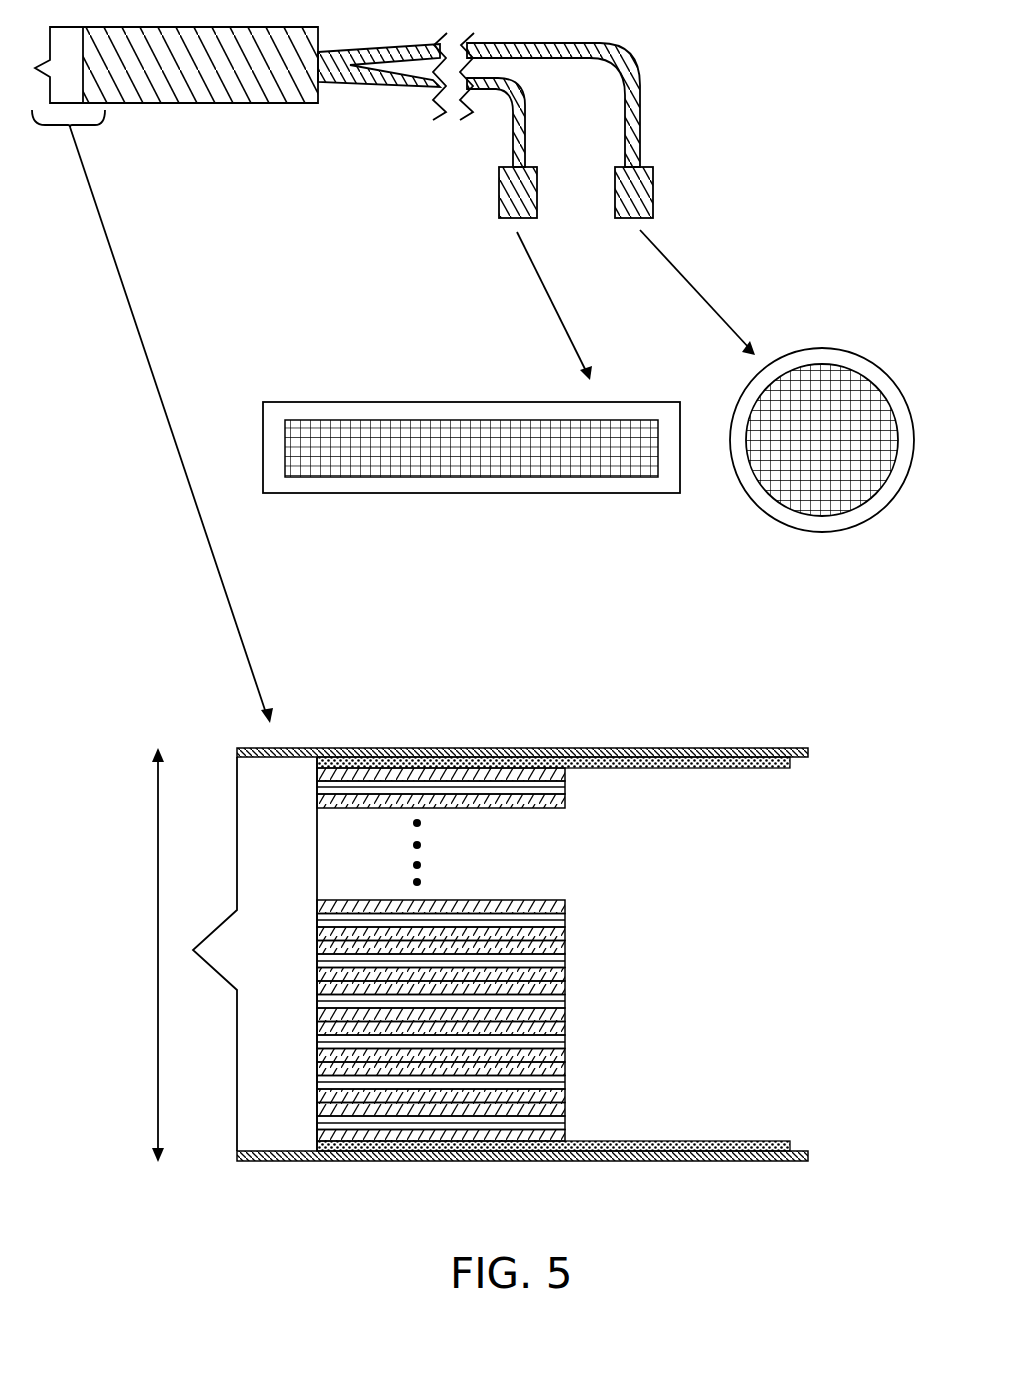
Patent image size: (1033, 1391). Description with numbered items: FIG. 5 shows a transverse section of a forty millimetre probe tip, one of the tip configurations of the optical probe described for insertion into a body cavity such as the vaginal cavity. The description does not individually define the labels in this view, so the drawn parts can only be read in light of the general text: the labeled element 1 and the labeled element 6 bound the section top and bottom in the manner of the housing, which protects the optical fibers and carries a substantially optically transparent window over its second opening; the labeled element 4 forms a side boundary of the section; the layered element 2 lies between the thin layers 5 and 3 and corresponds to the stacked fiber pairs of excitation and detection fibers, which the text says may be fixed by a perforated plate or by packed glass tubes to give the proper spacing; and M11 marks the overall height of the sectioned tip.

The upper cover plate 1 is at (720, 732).
The laminated layer stack 2 is at (566, 1036).
The lower adhesive layer 3 is at (679, 1141).
The side wall 4 is at (257, 1075).
The upper adhesive layer 5 is at (566, 1106).
The base plate 6 is at (408, 1161).
The stack height dimension M11 is at (157, 950).